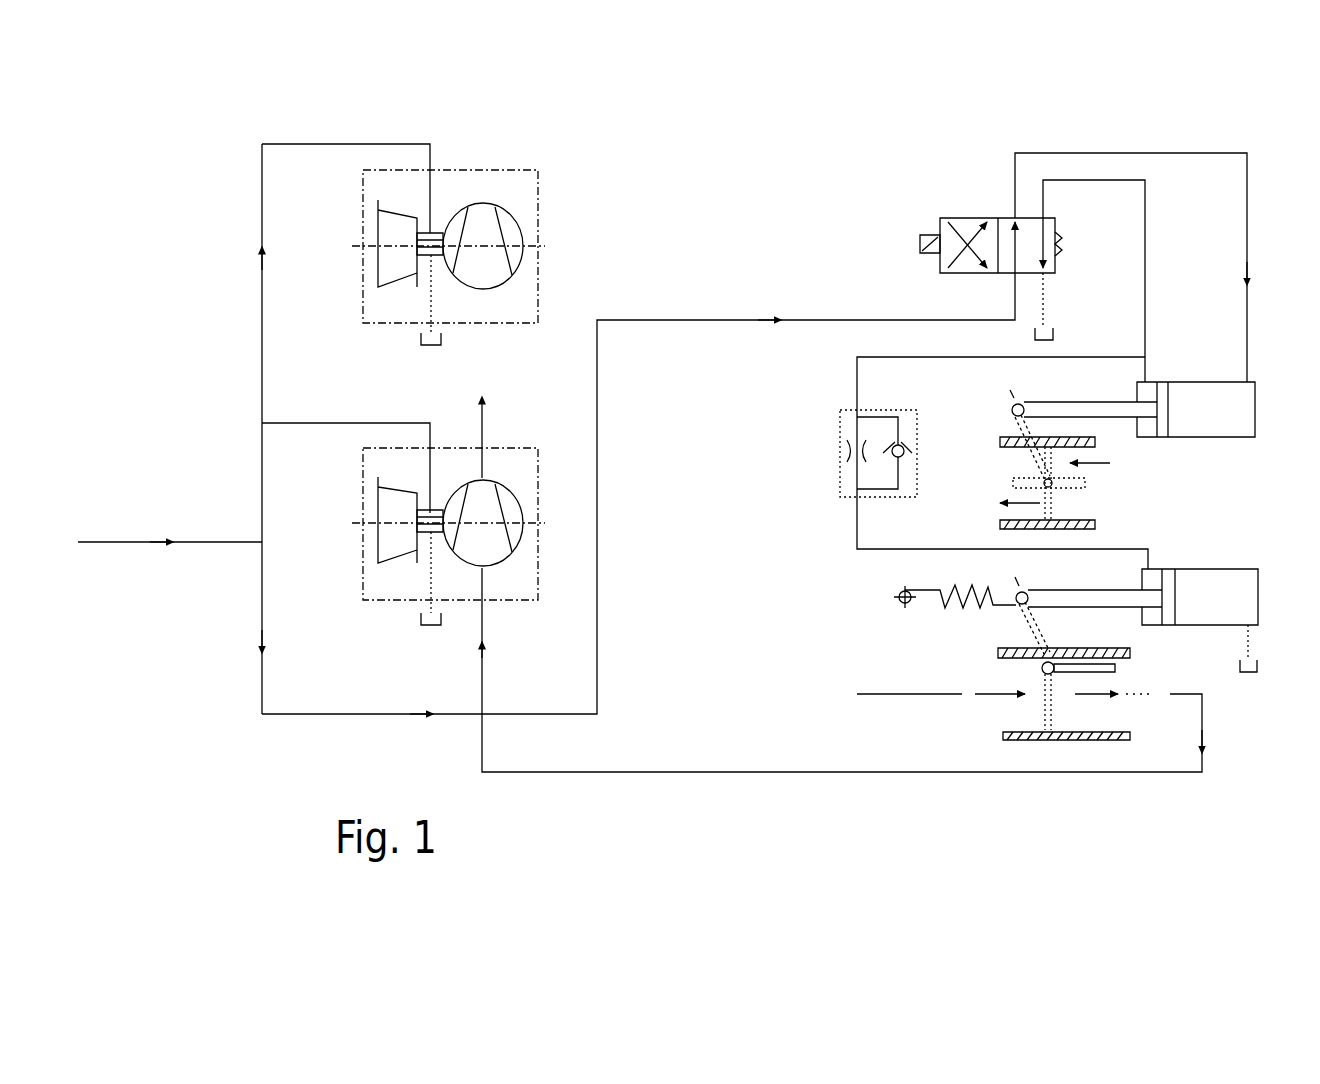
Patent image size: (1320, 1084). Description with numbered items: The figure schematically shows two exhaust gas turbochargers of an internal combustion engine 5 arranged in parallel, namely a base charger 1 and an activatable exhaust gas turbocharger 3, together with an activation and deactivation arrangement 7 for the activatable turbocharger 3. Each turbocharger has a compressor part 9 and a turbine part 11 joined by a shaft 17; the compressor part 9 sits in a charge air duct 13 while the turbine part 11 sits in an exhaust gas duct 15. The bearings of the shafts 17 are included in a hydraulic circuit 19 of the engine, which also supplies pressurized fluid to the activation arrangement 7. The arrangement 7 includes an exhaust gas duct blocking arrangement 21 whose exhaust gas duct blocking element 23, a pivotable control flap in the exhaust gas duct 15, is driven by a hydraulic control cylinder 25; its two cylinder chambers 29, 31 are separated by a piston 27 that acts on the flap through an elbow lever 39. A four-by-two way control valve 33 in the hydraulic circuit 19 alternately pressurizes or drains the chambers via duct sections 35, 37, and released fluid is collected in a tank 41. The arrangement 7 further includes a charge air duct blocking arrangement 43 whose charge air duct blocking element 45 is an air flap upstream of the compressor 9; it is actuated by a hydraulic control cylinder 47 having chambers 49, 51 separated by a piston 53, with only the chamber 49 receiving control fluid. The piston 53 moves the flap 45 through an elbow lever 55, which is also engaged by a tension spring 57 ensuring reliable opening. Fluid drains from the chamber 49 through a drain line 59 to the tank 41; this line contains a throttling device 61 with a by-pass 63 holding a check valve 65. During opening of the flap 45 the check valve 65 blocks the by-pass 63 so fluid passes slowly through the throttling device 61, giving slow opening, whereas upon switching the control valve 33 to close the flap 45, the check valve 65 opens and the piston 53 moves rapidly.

The base charger 1 is at (523, 199).
The activatable exhaust gas turbocharger 3 is at (390, 580).
The internal combustion engine 5 is at (772, 198).
The activation and deactivation arrangement 7 is at (806, 367).
The compressor part 9 is at (515, 233).
The turbine part 11 is at (385, 270).
The charge air duct 13 is at (783, 770).
The exhaust gas duct 15 is at (1078, 508).
The shaft 17 is at (417, 240).
The hydraulic circuit 19 is at (143, 540).
The exhaust gas duct blocking arrangement 21 is at (1180, 465).
The exhaust gas duct blocking element 23 is at (1018, 482).
The control cylinder 25 is at (1256, 376).
The piston 27 is at (1163, 382).
The right-side cylinder chamber 29 is at (1243, 424).
The left-side cylinder chamber 31 is at (1143, 430).
The control valve 33 is at (943, 207).
The duct section 35 is at (1146, 294).
The duct section 37 is at (1248, 258).
The elbow lever 39 is at (1050, 404).
The tank 41 is at (420, 343).
The charge air duct blocking arrangement 43 is at (890, 630).
The charge air duct blocking element 45 is at (1118, 668).
The hydraulic control cylinder 47 is at (1236, 588).
The cylinder chamber 49 is at (1147, 582).
The cylinder chamber 51 is at (1245, 613).
The piston 53 is at (1170, 580).
The elbow lever 55 is at (1066, 598).
The tension spring 57 is at (945, 607).
The drain line 59 is at (920, 360).
The throttling device 61 is at (847, 453).
The by-pass 63 is at (898, 490).
The check valve 65 is at (908, 459).